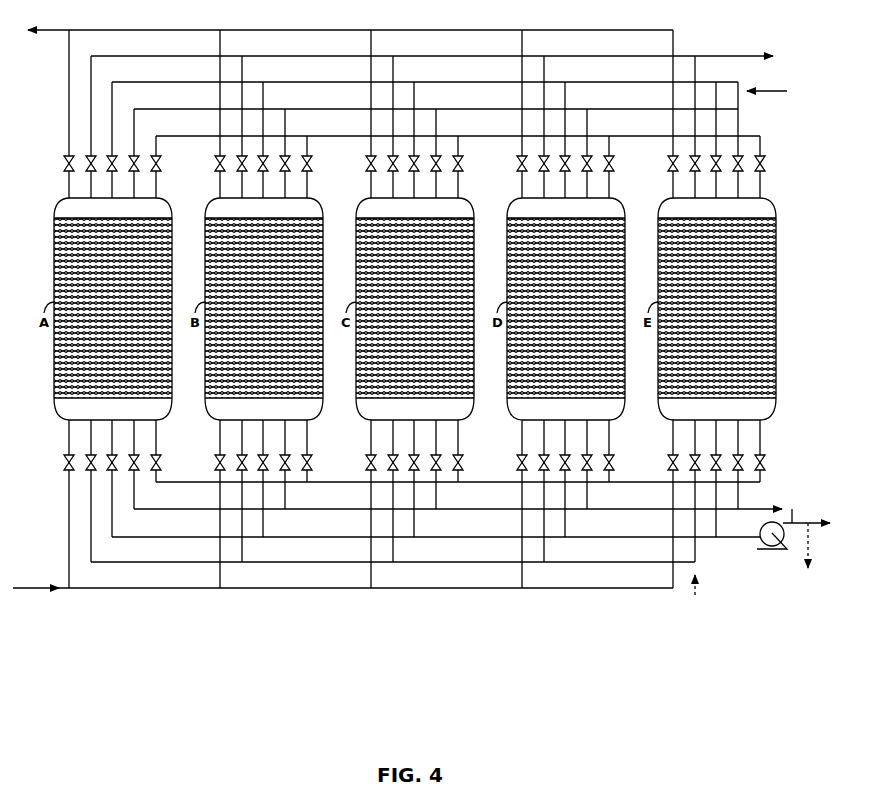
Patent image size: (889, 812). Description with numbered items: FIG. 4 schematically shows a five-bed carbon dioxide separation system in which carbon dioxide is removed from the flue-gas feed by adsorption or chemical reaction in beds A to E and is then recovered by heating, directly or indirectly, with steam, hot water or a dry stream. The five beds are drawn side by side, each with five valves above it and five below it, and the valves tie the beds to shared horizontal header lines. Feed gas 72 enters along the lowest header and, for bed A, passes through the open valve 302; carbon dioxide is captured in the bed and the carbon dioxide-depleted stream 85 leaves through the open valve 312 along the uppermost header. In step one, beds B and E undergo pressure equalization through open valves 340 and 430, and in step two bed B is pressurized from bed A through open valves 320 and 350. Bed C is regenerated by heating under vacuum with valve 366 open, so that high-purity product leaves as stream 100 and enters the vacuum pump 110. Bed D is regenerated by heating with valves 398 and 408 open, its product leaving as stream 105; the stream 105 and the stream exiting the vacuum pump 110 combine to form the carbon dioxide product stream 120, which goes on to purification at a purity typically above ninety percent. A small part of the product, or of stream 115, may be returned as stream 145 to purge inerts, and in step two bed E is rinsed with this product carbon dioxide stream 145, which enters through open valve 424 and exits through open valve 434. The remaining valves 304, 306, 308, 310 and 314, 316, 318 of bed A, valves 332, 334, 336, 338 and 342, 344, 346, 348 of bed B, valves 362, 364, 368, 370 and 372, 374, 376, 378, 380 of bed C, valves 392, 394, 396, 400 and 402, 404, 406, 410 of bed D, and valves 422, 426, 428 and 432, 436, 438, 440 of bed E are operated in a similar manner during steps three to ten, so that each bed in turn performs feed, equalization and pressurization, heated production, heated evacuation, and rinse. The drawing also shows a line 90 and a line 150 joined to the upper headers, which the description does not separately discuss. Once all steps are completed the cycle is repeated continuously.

The feed gas 72 is at (64, 590).
The carbon dioxide-depleted stream 85 is at (56, 31).
The purge gas inlet 90 is at (776, 92).
The carbon dioxide product stream to vacuum pump 100 is at (760, 538).
The desorbed carbon dioxide line 105 is at (760, 510).
The vacuum pump 110 is at (783, 549).
The stream 115 is at (813, 548).
The carbon dioxide product stream 120 is at (838, 518).
The purge/rinse carbon dioxide stream 145 is at (698, 587).
The regeneration gas outlet 150 is at (746, 63).
The valve 302 is at (65, 504).
The valve 304 is at (87, 491).
The valve 306 is at (108, 478).
The valve 308 is at (130, 464).
The valve 310 is at (152, 451).
The valve 312 is at (65, 114).
The valve 314 is at (87, 127).
The valve 316 is at (108, 140).
The valve 318 is at (130, 153).
The valve 320 is at (152, 167).
The valve 332 is at (216, 504).
The valve 334 is at (238, 491).
The valve 336 is at (259, 478).
The valve 338 is at (281, 464).
The valve 340 is at (303, 451).
The valve 342 is at (216, 114).
The valve 344 is at (238, 127).
The valve 346 is at (259, 140).
The valve 348 is at (281, 153).
The valve 350 is at (303, 167).
The valve 362 is at (367, 504).
The valve 364 is at (389, 491).
The valve 366 is at (410, 478).
The valve 368 is at (432, 464).
The valve 370 is at (454, 451).
The valve 372 is at (367, 114).
The valve 374 is at (389, 127).
The valve 376 is at (410, 140).
The valve 378 is at (432, 153).
The valve 380 is at (454, 167).
The valve 392 is at (518, 504).
The valve 394 is at (540, 491).
The valve 396 is at (561, 478).
The valve 398 is at (583, 464).
The valve 400 is at (605, 451).
The valve 402 is at (518, 114).
The valve 404 is at (540, 127).
The valve 406 is at (561, 140).
The valve 408 is at (583, 153).
The valve 410 is at (605, 167).
The valve 422 is at (669, 504).
The valve 424 is at (691, 491).
The valve 426 is at (712, 478).
The valve 428 is at (734, 464).
The valve 430 is at (756, 451).
The valve 432 is at (669, 114).
The valve 434 is at (691, 127).
The valve 436 is at (712, 140).
The valve 438 is at (734, 140).
The valve 440 is at (756, 167).